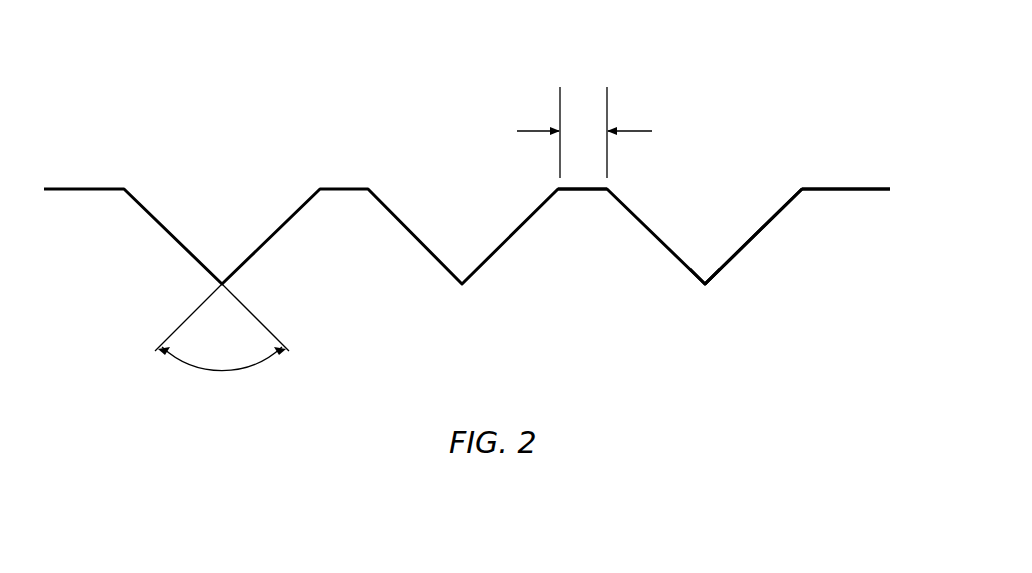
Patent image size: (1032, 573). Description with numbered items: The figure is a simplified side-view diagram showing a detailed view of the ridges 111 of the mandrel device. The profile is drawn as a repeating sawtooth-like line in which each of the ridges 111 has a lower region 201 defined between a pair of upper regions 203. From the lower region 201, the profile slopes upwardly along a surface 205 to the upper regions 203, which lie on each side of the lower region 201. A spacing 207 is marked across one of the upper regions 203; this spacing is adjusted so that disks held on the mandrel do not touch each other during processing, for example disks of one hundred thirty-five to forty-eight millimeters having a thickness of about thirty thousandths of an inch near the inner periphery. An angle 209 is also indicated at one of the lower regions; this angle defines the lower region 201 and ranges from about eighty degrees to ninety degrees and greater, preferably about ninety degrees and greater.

The ridges 111 is at (849, 73).
The lower region 201 is at (713, 292).
The upper regions 203 is at (607, 189).
The surface 205 is at (767, 227).
The spacing 207 is at (588, 180).
The angle 209 is at (265, 322).